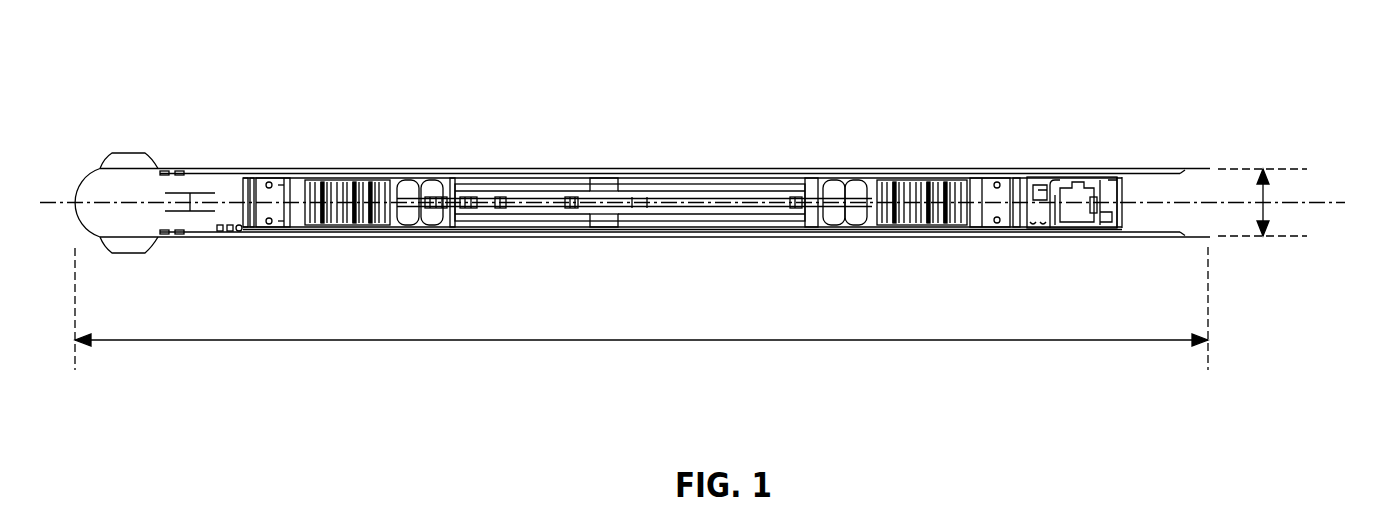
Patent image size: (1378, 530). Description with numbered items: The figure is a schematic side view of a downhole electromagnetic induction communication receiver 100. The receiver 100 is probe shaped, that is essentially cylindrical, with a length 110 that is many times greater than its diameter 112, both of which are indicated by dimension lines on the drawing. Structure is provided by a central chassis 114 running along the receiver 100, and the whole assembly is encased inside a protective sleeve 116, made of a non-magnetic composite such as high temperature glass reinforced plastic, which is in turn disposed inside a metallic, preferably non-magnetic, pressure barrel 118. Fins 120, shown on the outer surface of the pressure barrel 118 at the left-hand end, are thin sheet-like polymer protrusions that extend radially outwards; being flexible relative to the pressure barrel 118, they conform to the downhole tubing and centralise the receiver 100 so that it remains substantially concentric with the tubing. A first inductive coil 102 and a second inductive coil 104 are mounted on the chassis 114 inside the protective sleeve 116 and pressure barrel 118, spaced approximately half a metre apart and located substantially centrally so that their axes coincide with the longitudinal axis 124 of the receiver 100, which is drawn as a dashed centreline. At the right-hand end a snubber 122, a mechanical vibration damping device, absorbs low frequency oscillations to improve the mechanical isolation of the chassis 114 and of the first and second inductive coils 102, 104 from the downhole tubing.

The receiver 100 is at (688, 97).
The first inductive coil 102 is at (328, 187).
The second inductive coil 104 is at (903, 192).
The length 110 is at (603, 340).
The diameter 112 is at (1265, 205).
The central chassis 114 is at (518, 192).
The protective sleeve 116 is at (478, 235).
The pressure barrel 118 is at (707, 168).
The fins 120 is at (130, 160).
The snubber 122 is at (1075, 205).
The longitudinal axis 124 is at (1320, 202).